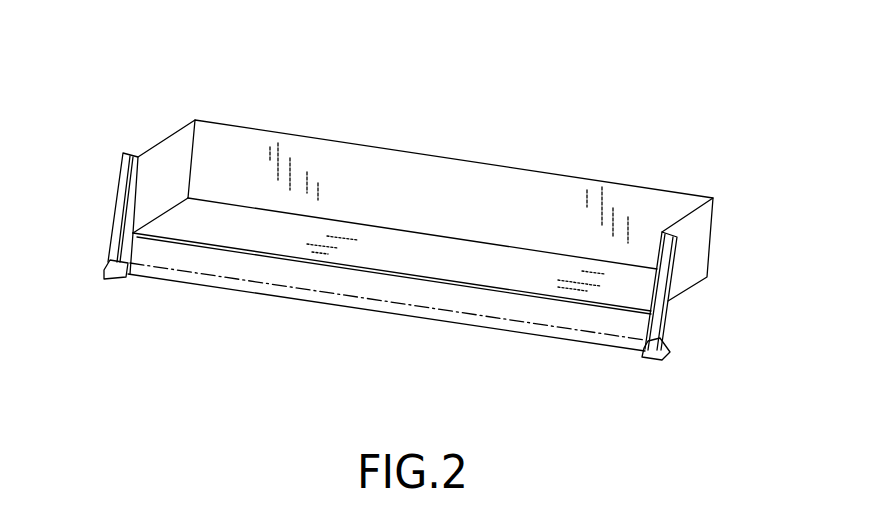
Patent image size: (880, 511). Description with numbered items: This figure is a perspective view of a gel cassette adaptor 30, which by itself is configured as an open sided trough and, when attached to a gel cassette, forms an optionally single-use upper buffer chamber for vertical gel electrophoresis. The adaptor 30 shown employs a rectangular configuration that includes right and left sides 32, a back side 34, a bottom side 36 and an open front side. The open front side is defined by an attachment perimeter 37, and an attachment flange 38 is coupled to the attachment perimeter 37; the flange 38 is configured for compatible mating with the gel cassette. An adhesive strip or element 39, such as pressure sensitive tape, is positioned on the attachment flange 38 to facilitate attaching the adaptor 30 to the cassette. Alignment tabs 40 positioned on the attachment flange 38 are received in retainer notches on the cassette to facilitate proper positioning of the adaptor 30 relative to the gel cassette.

The gel cassette adaptor 30 is at (523, 101).
The right and left sides 32 is at (178, 166).
The back side 34 is at (508, 183).
The bottom side 36 is at (523, 267).
The attachment perimeter 37 is at (252, 252).
The attachment flange 38 is at (389, 304).
The adhesive strip 39 is at (417, 296).
The alignment tabs 40 is at (110, 268).